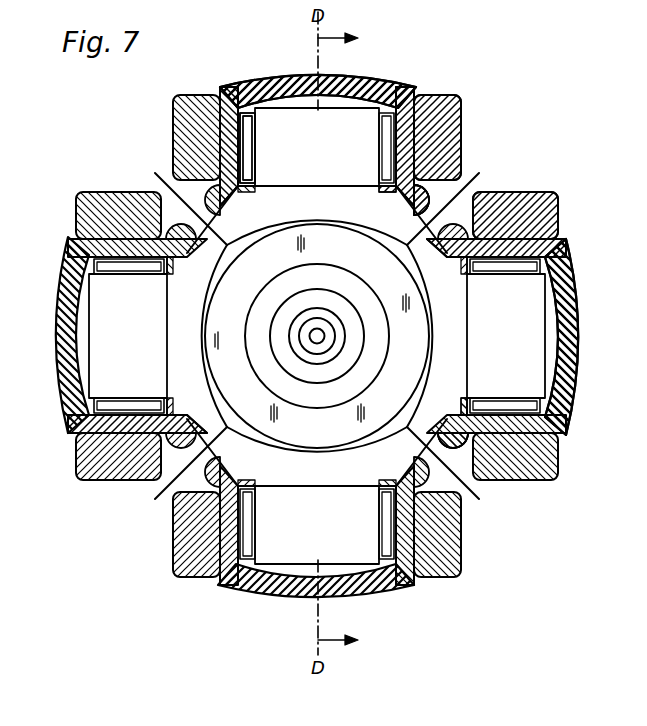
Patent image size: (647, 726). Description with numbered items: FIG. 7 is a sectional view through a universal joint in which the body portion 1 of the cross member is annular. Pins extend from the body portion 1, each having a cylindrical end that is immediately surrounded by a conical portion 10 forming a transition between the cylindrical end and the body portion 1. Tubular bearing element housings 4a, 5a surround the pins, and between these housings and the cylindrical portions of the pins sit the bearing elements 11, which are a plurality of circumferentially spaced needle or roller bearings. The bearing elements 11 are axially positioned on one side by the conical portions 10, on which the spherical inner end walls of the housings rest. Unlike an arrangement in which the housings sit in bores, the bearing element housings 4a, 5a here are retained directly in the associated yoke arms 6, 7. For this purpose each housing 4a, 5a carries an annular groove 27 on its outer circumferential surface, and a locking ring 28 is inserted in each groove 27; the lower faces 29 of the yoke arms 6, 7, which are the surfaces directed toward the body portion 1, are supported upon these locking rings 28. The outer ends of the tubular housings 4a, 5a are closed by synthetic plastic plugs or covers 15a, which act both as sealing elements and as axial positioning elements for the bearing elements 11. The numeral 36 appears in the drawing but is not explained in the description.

The body portion 1 is at (230, 284).
The bearing element housing 4a is at (414, 108).
The bearing element housing 5a is at (566, 246).
The yoke arm 6 is at (462, 118).
The yoke arm 7 is at (547, 192).
The conical portion 10 is at (188, 204).
The bearing elements 11 is at (248, 108).
The synthetic plastic plug or cover 15a is at (296, 78).
The annular groove 27 is at (393, 190).
The locking ring 28 is at (402, 193).
The lower face 29 is at (445, 196).
The bearing cup open-end rim 36 is at (224, 203).